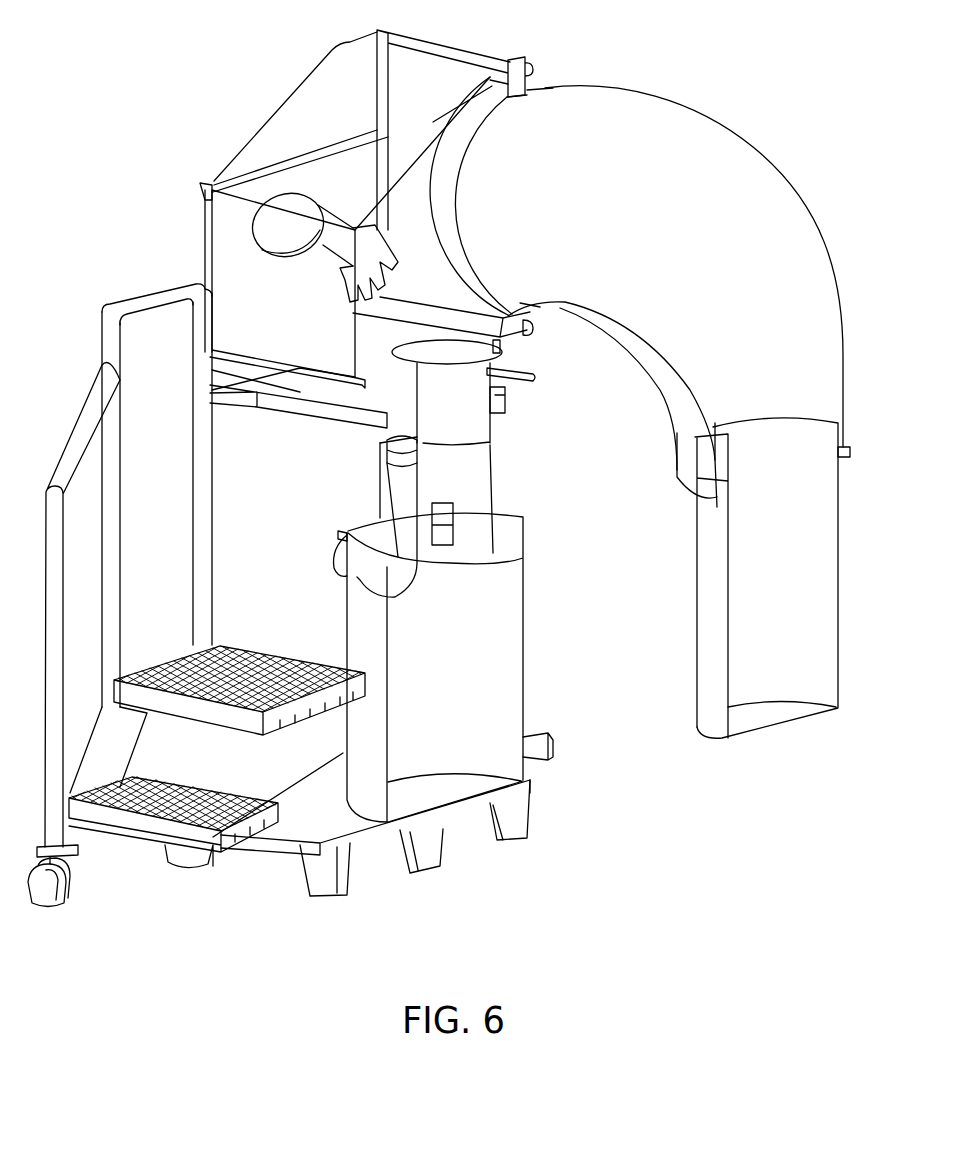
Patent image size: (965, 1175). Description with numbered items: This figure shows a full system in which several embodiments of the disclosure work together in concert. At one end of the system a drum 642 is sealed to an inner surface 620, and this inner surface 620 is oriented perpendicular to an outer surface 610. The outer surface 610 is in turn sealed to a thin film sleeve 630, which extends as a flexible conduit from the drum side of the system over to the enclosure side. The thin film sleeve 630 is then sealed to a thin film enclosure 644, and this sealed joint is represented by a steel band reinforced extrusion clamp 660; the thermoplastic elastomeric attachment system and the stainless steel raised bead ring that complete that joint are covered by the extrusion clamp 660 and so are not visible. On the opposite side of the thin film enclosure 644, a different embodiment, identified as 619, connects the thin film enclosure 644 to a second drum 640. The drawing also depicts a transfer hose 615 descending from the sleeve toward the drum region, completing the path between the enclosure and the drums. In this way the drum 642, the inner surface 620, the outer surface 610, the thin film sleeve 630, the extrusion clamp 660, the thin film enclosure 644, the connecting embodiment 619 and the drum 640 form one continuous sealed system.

The thin film enclosure 644 is at (314, 72).
The thin film sleeve 630 is at (730, 160).
The steel band reinforced extrusion clamp 660 is at (532, 308).
The connecting embodiment 619 is at (498, 417).
The transfer hose 615 is at (713, 517).
The inner surface 620 is at (727, 496).
The outer surface 610 is at (840, 455).
The drum 642 is at (833, 627).
The drum 640 is at (520, 710).